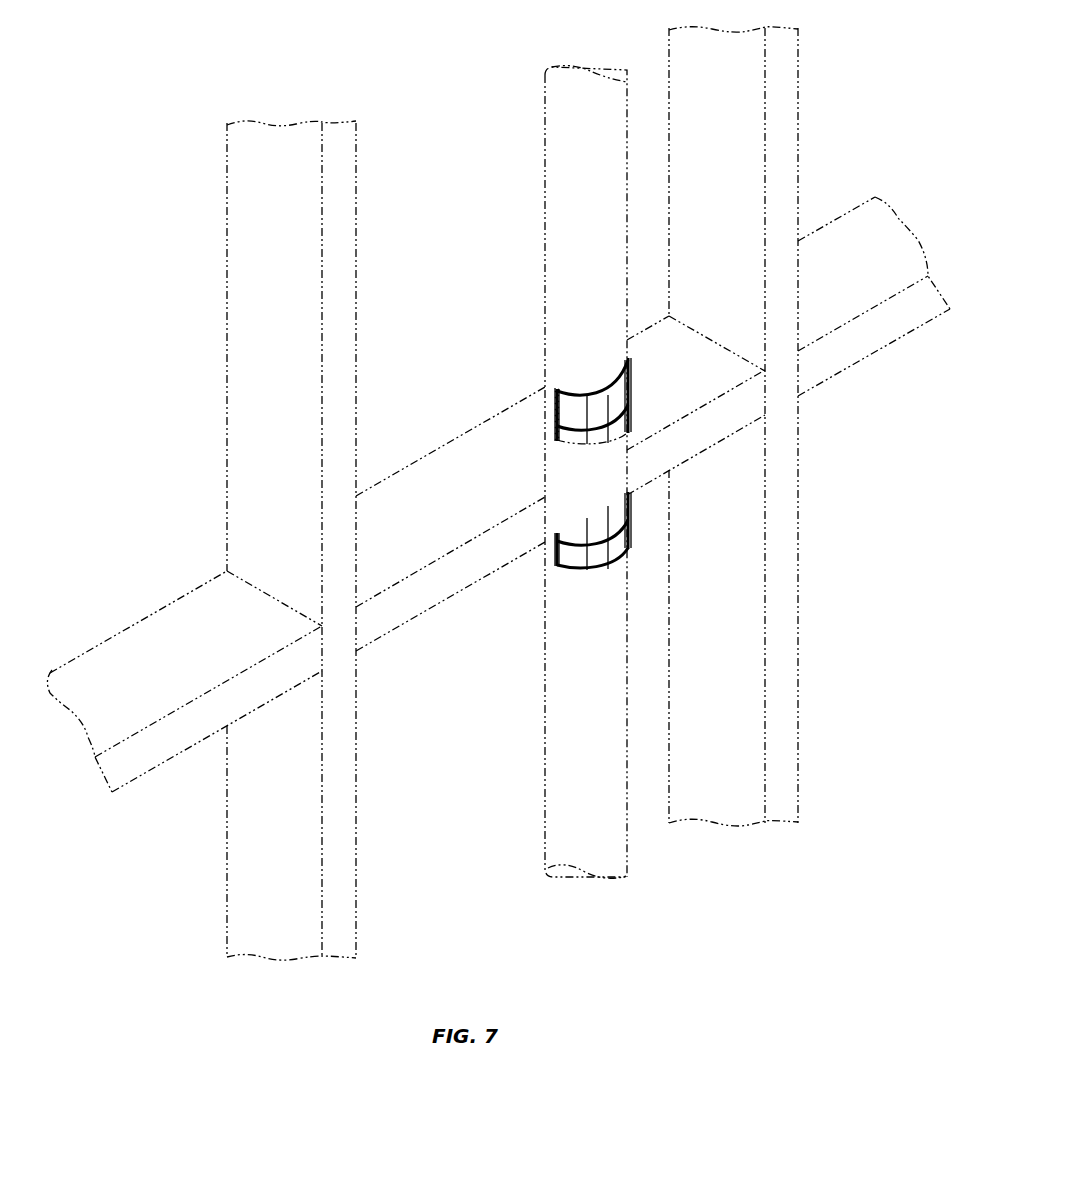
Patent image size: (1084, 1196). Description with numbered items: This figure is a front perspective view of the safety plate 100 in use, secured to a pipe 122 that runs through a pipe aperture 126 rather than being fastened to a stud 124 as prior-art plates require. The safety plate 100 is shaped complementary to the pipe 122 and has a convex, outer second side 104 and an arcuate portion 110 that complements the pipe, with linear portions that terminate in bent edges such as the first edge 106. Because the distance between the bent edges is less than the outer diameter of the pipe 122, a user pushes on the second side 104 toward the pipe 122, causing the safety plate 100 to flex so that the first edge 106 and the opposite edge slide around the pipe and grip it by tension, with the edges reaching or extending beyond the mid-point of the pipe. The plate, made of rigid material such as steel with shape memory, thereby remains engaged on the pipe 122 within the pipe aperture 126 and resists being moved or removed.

The safety plate 100 is at (567, 450).
The second side 104 is at (630, 404).
The first edge 106 is at (567, 416).
The arcuate portion 110 is at (597, 568).
The pipe 122 is at (572, 742).
The stud 124 is at (455, 572).
The pipe aperture 126 is at (547, 428).